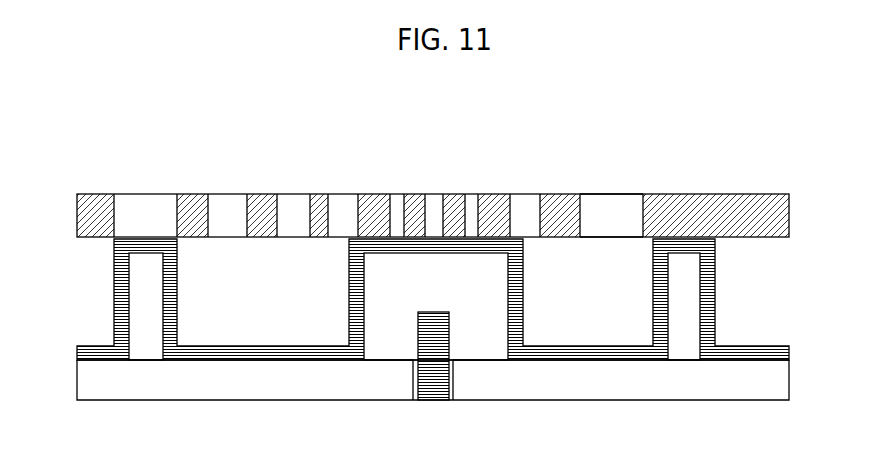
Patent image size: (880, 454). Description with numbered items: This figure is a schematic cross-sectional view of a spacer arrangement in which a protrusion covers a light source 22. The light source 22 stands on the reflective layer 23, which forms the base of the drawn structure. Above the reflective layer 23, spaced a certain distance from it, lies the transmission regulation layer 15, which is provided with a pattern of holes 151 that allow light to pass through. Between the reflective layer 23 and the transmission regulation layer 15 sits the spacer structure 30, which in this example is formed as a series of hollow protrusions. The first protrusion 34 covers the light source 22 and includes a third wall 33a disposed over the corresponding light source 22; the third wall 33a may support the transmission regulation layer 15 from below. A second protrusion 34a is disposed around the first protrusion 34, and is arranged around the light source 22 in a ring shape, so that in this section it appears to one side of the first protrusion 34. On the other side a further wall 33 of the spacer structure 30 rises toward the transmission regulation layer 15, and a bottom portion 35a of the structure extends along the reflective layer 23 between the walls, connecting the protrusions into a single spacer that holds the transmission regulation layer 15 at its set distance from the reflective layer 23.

The transmission regulation layer 15 is at (783, 214).
The holes 151 is at (623, 217).
The partition structure 30 is at (435, 299).
The second protrusion 34a is at (103, 301).
The protrusion 34 is at (396, 299).
The third wall 33a is at (390, 253).
The partition wall 33 is at (687, 253).
The bottom layer 35a is at (590, 353).
The light source 22 is at (430, 314).
The reflective layer 23 is at (780, 378).